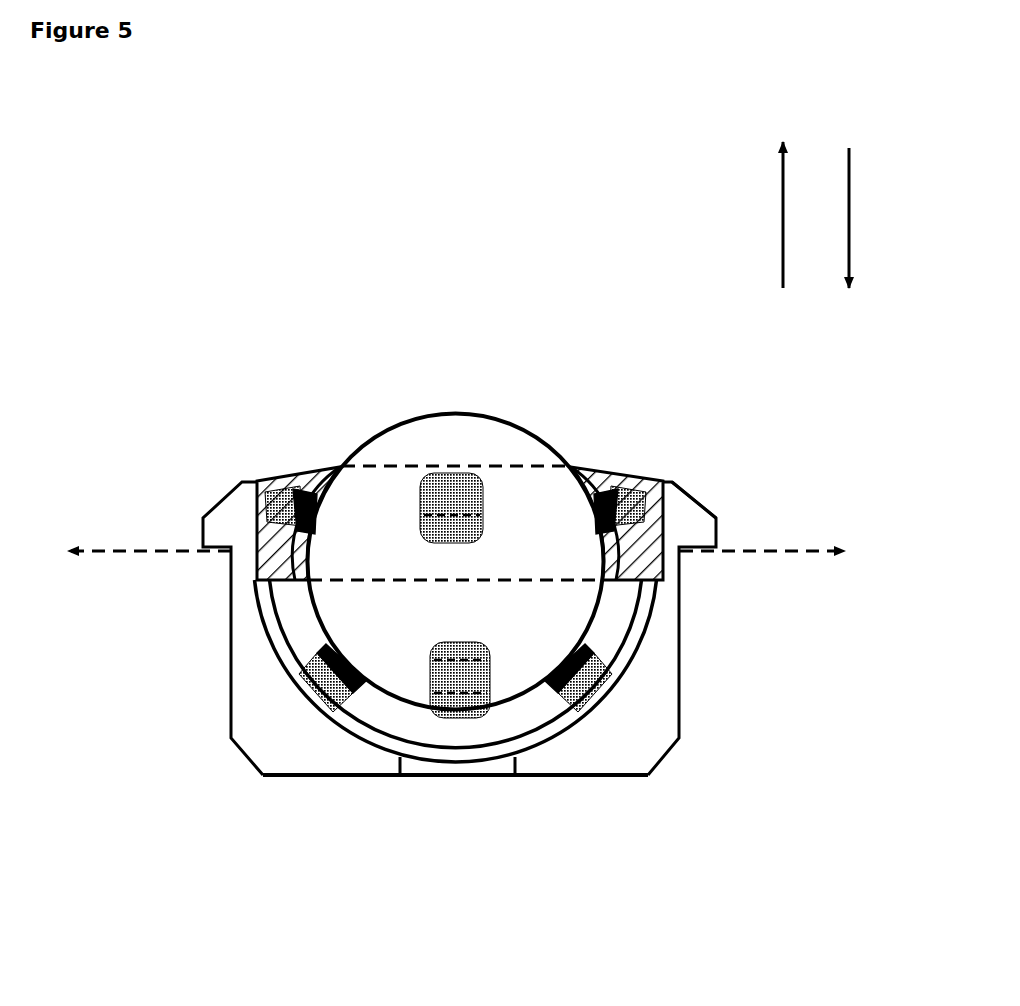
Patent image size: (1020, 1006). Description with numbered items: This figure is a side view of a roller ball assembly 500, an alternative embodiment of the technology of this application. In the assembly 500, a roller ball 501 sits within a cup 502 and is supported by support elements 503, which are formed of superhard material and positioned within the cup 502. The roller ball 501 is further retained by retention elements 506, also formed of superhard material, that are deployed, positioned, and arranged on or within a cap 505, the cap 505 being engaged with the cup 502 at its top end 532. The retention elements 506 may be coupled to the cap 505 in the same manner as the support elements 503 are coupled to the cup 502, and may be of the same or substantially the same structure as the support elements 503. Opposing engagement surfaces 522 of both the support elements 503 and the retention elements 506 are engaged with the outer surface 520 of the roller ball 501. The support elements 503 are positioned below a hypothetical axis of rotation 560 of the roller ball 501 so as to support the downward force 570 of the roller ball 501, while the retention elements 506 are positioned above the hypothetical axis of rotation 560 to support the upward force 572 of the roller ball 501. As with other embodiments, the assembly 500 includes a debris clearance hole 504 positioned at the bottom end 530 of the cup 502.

The roller ball assembly 500 is at (383, 195).
The roller ball 501 is at (364, 409).
The cup 502 is at (232, 705).
The support elements 503 is at (330, 682).
The debris clearance hole 504 is at (432, 792).
The cap 505 is at (650, 479).
The retention elements 506 is at (456, 492).
The outer surface 520 is at (455, 405).
The engagement surfaces 522 is at (600, 513).
The bottom end 530 is at (360, 779).
The top end 532 is at (690, 495).
The hypothetical axis of rotation 560 is at (146, 551).
The downward force 570 is at (854, 233).
The upward force 572 is at (779, 229).